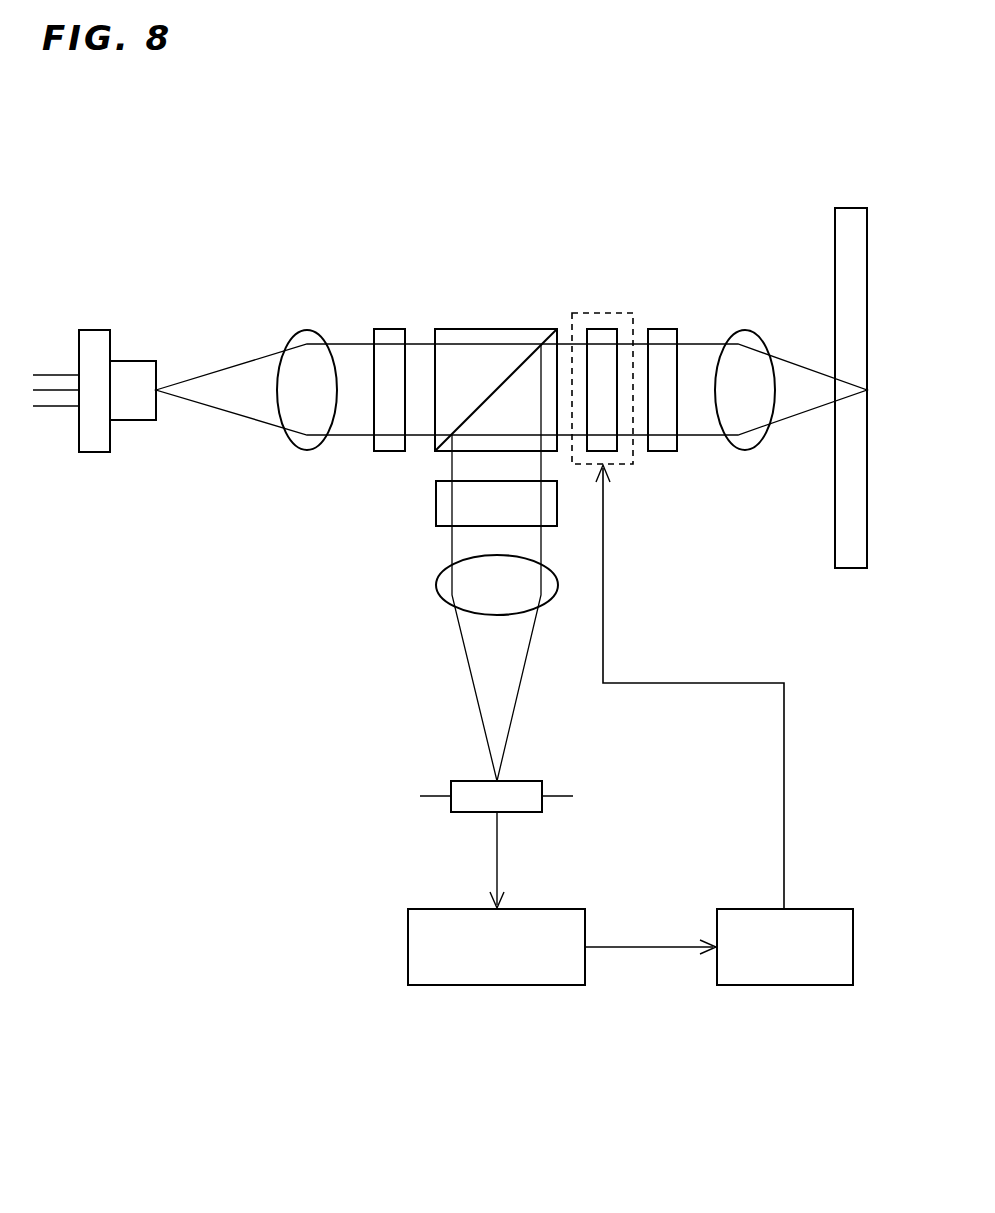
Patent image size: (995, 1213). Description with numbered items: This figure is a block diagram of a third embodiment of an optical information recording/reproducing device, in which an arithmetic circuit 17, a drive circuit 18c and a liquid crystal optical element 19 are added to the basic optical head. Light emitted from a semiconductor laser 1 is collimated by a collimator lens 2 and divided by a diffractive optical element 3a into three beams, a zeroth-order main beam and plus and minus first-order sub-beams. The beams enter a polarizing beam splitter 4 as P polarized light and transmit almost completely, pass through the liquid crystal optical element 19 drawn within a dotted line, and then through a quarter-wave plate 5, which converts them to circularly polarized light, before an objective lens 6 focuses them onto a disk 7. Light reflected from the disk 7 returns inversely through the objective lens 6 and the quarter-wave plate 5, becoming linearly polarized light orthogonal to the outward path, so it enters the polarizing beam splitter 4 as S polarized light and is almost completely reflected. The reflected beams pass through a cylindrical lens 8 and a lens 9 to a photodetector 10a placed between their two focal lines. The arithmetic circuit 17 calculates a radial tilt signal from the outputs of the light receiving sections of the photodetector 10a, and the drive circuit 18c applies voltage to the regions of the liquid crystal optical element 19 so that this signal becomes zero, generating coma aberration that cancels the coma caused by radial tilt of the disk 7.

The semiconductor laser 1 is at (94, 330).
The collimator lens 2 is at (303, 330).
The diffractive optical element 3a is at (390, 329).
The polarizing beam splitter 4 is at (488, 329).
The liquid crystal optical element 19 is at (602, 329).
The quarter-wave plate 5 is at (660, 451).
The objective lens 6 is at (746, 335).
The disk 7 is at (856, 208).
The cylindrical lens 8 is at (436, 500).
The lens 9 is at (438, 592).
The photodetector 10a is at (466, 781).
The arithmetic circuit 17 is at (462, 985).
The drive circuit 18c is at (780, 985).